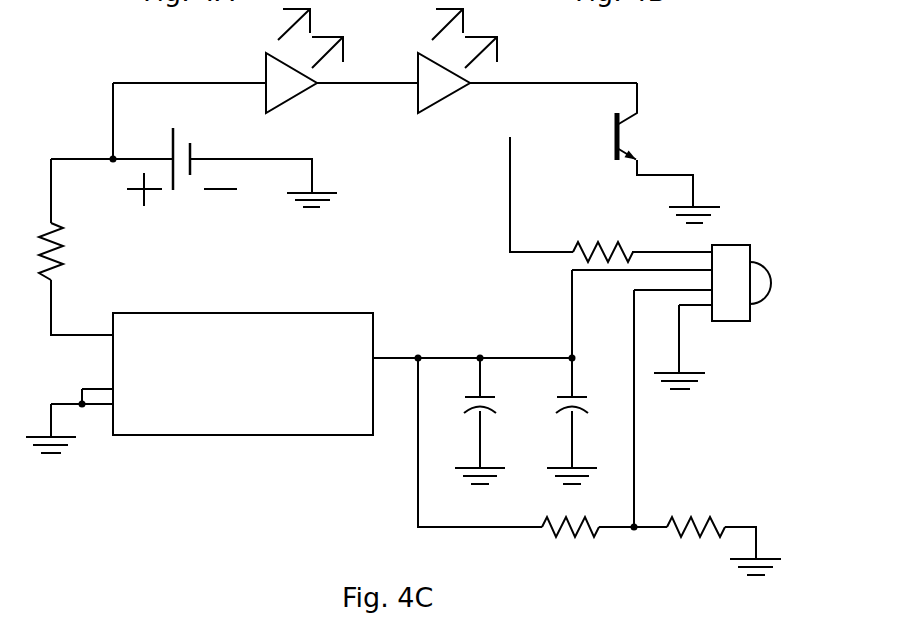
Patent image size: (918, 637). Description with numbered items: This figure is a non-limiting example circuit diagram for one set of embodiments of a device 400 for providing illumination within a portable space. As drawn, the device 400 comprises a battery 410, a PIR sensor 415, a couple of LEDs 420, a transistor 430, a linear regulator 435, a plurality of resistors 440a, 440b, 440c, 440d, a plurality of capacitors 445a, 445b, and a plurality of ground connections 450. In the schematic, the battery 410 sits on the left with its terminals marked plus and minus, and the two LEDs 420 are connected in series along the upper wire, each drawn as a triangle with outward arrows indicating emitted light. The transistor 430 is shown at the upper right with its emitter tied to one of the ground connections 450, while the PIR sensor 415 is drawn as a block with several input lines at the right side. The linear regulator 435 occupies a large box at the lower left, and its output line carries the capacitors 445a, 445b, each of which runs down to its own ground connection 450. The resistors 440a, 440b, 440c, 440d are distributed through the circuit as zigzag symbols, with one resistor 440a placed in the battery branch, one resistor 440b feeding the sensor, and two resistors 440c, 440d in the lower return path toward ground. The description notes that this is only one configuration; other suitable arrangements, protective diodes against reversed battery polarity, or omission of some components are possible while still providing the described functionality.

The device 400 is at (186, 561).
The battery 410 is at (229, 227).
The PIR sensor 415 is at (750, 312).
The LEDs 420 is at (452, 95).
The transistor 430 is at (670, 121).
The linear regulator 435 is at (362, 428).
The resistor 440a is at (84, 267).
The resistor 440b is at (588, 226).
The resistor 440c is at (559, 550).
The resistor 440d is at (681, 550).
The capacitor 445a is at (458, 443).
The capacitor 445b is at (548, 425).
The ground connections 450 is at (739, 182).